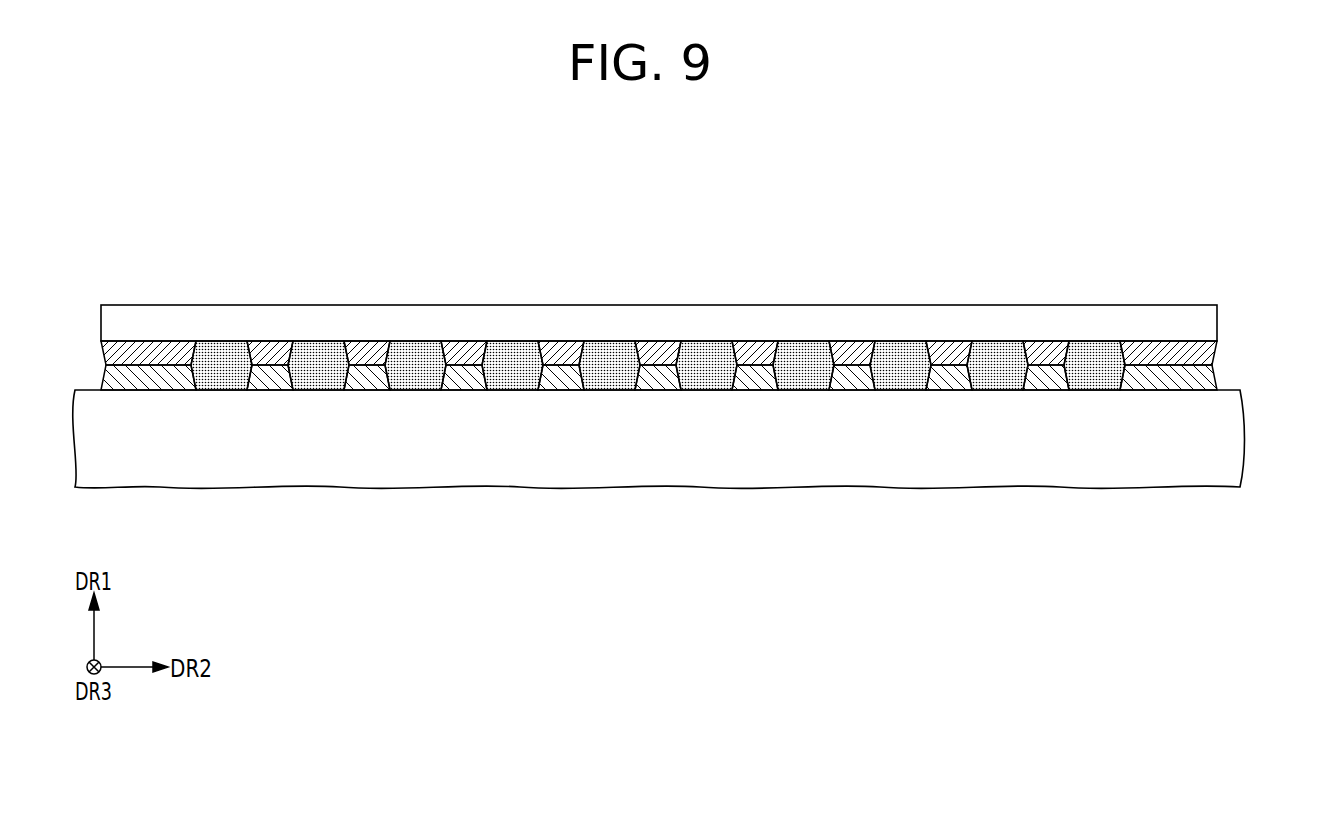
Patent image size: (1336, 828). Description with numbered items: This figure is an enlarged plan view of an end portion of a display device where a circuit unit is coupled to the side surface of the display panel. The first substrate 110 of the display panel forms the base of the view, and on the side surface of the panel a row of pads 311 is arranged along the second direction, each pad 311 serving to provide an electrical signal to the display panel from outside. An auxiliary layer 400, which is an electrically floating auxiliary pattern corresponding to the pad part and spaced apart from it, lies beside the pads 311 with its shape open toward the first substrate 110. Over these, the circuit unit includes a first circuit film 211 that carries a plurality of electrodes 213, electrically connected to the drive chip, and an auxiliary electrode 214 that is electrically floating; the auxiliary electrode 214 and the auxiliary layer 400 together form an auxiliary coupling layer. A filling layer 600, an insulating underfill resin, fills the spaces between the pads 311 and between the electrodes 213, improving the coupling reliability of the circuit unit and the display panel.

The first substrate 110 is at (1230, 435).
The first circuit film 211 is at (567, 315).
The electrode 213 is at (265, 348).
The auxiliary electrode 214 is at (144, 348).
The pad 311 is at (262, 378).
The auxiliary layer 400 is at (148, 380).
The filling layer 600 is at (410, 350).